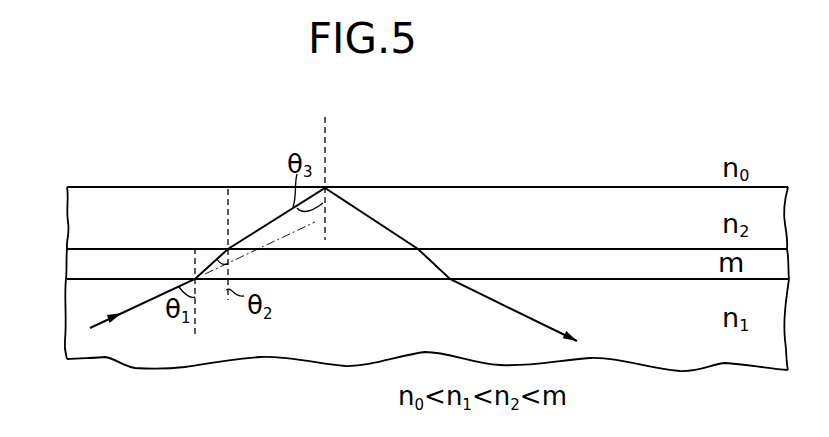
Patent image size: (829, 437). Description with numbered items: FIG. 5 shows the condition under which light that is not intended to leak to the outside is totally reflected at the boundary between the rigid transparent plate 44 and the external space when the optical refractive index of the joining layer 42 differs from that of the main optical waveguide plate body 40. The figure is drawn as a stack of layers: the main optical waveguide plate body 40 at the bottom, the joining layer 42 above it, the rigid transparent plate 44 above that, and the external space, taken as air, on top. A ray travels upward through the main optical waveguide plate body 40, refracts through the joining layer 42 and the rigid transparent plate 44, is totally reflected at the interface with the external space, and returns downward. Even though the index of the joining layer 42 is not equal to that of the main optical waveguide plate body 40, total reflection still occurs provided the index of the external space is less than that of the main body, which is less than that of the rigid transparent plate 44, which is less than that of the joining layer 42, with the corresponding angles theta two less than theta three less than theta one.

The main optical waveguide plate body 40 is at (80, 315).
The joining layer 42 is at (83, 262).
The rigid transparent plate 44 is at (85, 218).